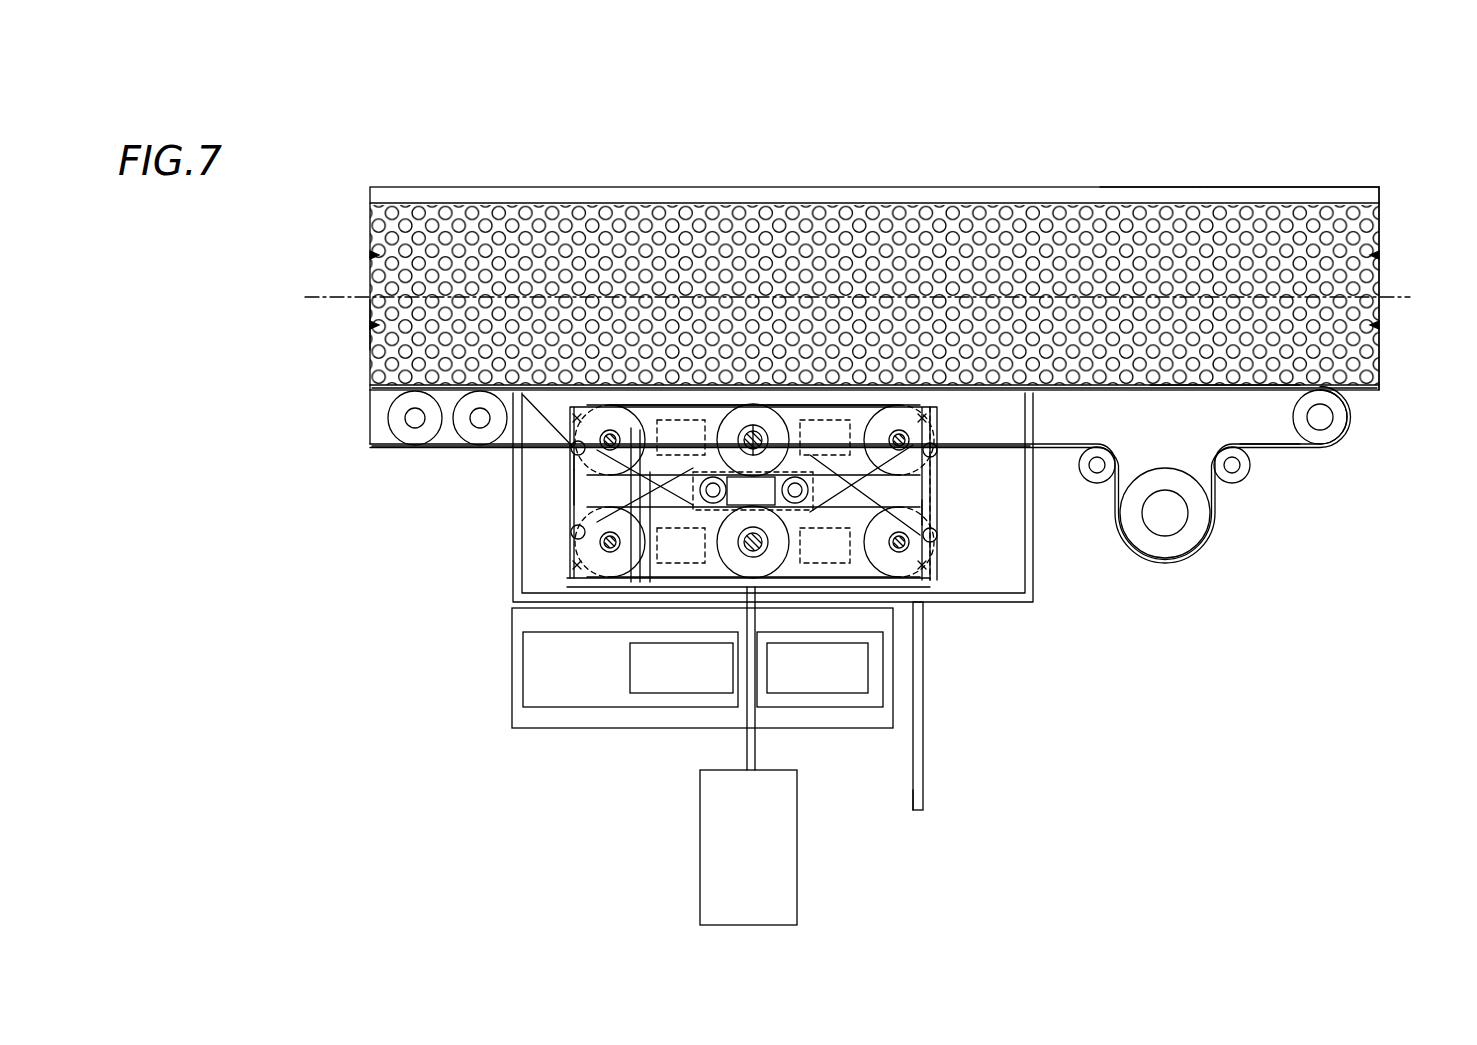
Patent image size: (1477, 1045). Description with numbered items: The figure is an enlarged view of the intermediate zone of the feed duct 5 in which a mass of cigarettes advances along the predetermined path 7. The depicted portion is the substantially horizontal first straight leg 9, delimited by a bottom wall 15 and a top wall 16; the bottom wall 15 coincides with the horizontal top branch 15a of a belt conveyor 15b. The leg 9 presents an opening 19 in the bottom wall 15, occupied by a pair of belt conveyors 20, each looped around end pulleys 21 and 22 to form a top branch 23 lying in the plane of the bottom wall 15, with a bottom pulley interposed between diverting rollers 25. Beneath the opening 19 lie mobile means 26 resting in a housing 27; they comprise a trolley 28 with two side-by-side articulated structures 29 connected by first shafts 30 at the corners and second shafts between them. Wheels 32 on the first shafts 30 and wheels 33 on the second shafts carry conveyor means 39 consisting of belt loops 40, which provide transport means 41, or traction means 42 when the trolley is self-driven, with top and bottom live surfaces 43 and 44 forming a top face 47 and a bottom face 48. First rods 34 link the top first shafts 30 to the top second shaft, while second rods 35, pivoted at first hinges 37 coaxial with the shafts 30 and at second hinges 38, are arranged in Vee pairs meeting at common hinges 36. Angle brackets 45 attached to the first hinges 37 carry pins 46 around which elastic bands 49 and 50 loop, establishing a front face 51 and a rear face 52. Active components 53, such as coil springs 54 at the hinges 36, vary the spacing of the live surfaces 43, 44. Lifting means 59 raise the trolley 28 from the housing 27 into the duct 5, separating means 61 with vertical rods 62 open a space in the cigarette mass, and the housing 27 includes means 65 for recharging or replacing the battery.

The feed duct 5 is at (1289, 185).
The predetermined path 7 is at (1405, 297).
The first straight leg 9 is at (1181, 185).
The bottom wall 15 is at (1377, 390).
The horizontal top branch 15a is at (385, 383).
The belt conveyor 15b is at (376, 442).
The top wall 16 is at (1344, 185).
The opening 19 is at (942, 465).
The belt conveyors 20 is at (1305, 448).
The end pulley 21 is at (369, 325).
The end pulley 22 is at (1343, 417).
The top branch 23 is at (1227, 386).
The diverting rollers 25 is at (1247, 474).
The mobile means 26 is at (1195, 532).
The housing 27 is at (524, 511).
The trolley 28 is at (560, 566).
The articulated structures 29 is at (797, 477).
The first shafts 30 is at (596, 444).
The wheels 32 is at (640, 437).
The wheels 33 is at (742, 426).
The first rods 34 is at (665, 425).
The second rods 35 is at (640, 584).
The common hinges 36 is at (745, 600).
The first hinges 37 is at (600, 433).
The second hinges 38 is at (735, 515).
The conveyor means 39 is at (615, 420).
The belt loops 40 is at (826, 425).
The transport means 41 is at (633, 428).
The traction means 42 is at (896, 585).
The top live surface 43 is at (573, 445).
The bottom live surface 44 is at (878, 586).
The angle brackets 45 is at (579, 418).
The pin 46 is at (573, 445).
The top face 47 is at (760, 430).
The bottom face 48 is at (605, 592).
The elastic band 49 is at (568, 487).
The elastic band 50 is at (1035, 420).
The front face 51 is at (560, 462).
The rear face 52 is at (944, 492).
The active components 53 is at (835, 440).
The coil springs 54 is at (676, 420).
The lifting means 59 is at (735, 866).
The separating means 61 is at (930, 737).
The vertical rods 62 is at (928, 793).
The recharging means 65 is at (688, 684).